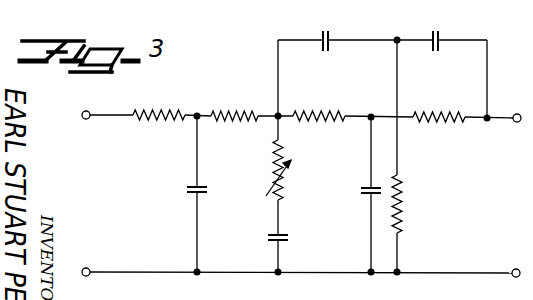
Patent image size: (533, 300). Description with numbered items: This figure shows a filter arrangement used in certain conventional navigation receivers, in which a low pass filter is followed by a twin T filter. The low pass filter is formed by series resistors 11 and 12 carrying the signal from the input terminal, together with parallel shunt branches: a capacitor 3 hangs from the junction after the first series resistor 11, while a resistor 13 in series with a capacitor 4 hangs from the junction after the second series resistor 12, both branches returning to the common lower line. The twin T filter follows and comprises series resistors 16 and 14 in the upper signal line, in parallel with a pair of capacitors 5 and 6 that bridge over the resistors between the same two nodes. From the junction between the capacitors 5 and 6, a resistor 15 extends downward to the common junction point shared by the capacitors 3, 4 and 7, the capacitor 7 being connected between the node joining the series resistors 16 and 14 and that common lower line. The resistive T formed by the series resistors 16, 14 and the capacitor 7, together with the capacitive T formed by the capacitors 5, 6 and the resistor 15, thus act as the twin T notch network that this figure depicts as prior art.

The series resistor 11 is at (159, 104).
The series resistor 12 is at (234, 104).
The resistor 13 is at (297, 170).
The series resistor 14 is at (439, 104).
The resistor 15 is at (416, 204).
The series resistor 16 is at (321, 104).
The capacitor 3 is at (187, 203).
The capacitor 4 is at (290, 246).
The capacitor 5 is at (338, 33).
The capacitor 6 is at (438, 32).
The capacitor 7 is at (363, 178).